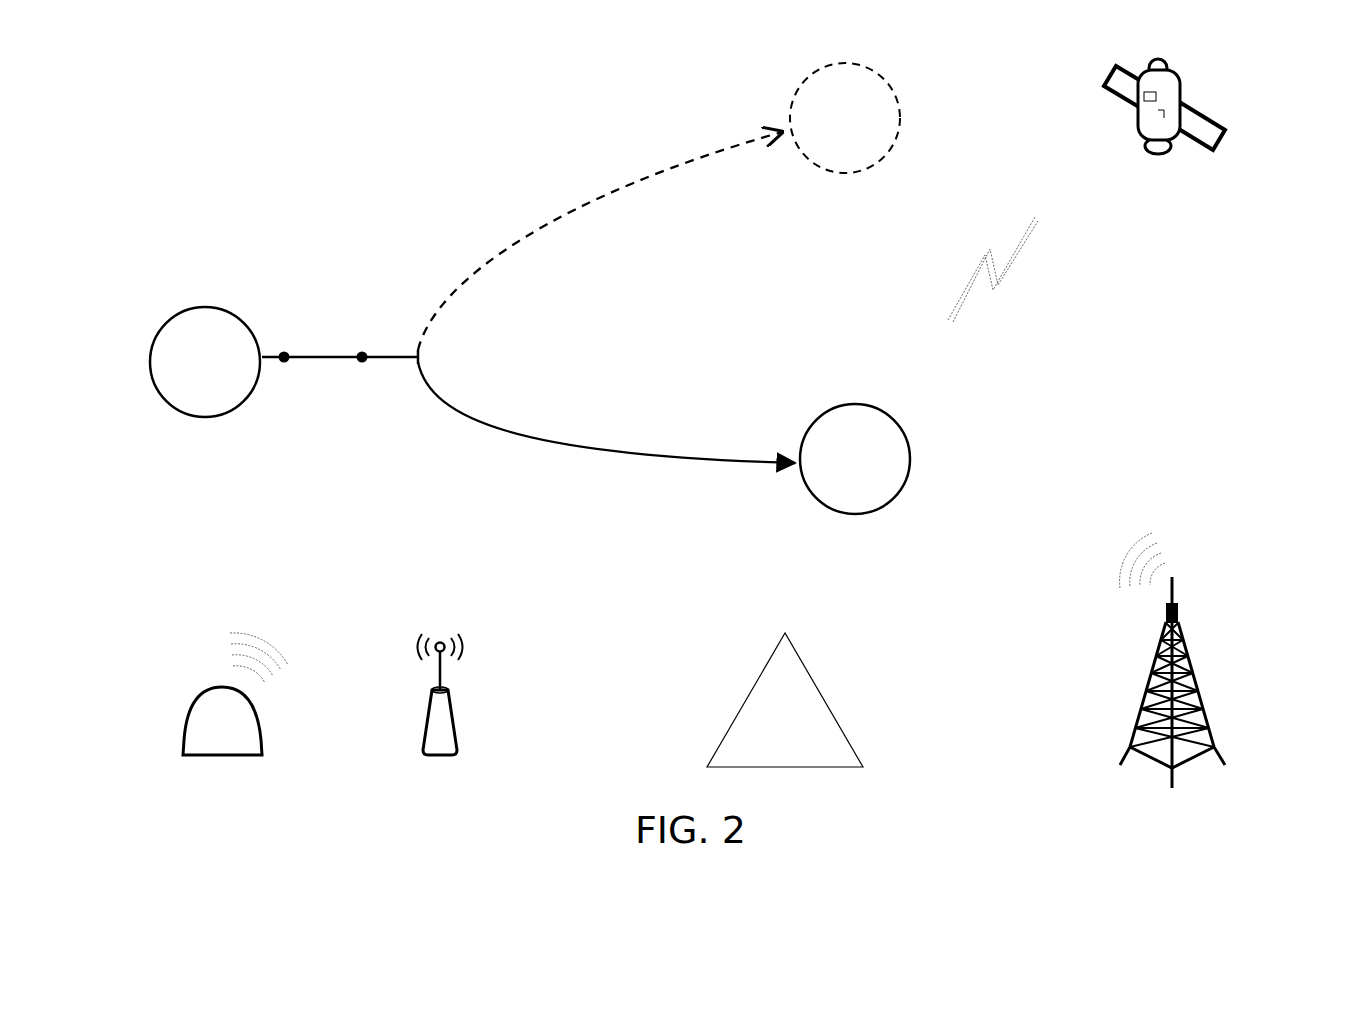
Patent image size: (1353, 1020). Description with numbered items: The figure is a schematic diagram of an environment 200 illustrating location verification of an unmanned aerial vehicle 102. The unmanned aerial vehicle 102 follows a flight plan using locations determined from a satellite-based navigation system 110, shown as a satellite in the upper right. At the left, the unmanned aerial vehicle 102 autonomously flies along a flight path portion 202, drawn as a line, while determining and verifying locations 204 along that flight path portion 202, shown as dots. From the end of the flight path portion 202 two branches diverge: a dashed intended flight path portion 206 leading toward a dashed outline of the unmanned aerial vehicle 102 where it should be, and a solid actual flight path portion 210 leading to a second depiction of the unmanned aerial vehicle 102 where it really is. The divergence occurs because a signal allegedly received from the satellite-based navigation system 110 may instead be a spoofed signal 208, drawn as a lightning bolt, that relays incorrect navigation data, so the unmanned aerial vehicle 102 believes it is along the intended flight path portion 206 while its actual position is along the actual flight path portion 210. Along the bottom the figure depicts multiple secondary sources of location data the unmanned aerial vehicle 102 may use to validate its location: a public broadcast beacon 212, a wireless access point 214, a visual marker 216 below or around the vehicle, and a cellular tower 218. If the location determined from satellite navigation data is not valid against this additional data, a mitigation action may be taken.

The environment 200 is at (228, 124).
The unmanned aerial vehicle 102 is at (232, 311).
The satellite-based navigation system 110 is at (1178, 102).
The flight path portion 202 is at (340, 326).
The locations 204 is at (285, 363).
The intended flight path portion 206 is at (647, 188).
The spoofed signal 208 is at (983, 268).
The actual flight path portion 210 is at (623, 450).
The public broadcast beacon 212 is at (258, 727).
The wireless access point 214 is at (457, 730).
The visual marker 216 is at (828, 705).
The cellular tower 218 is at (1200, 707).